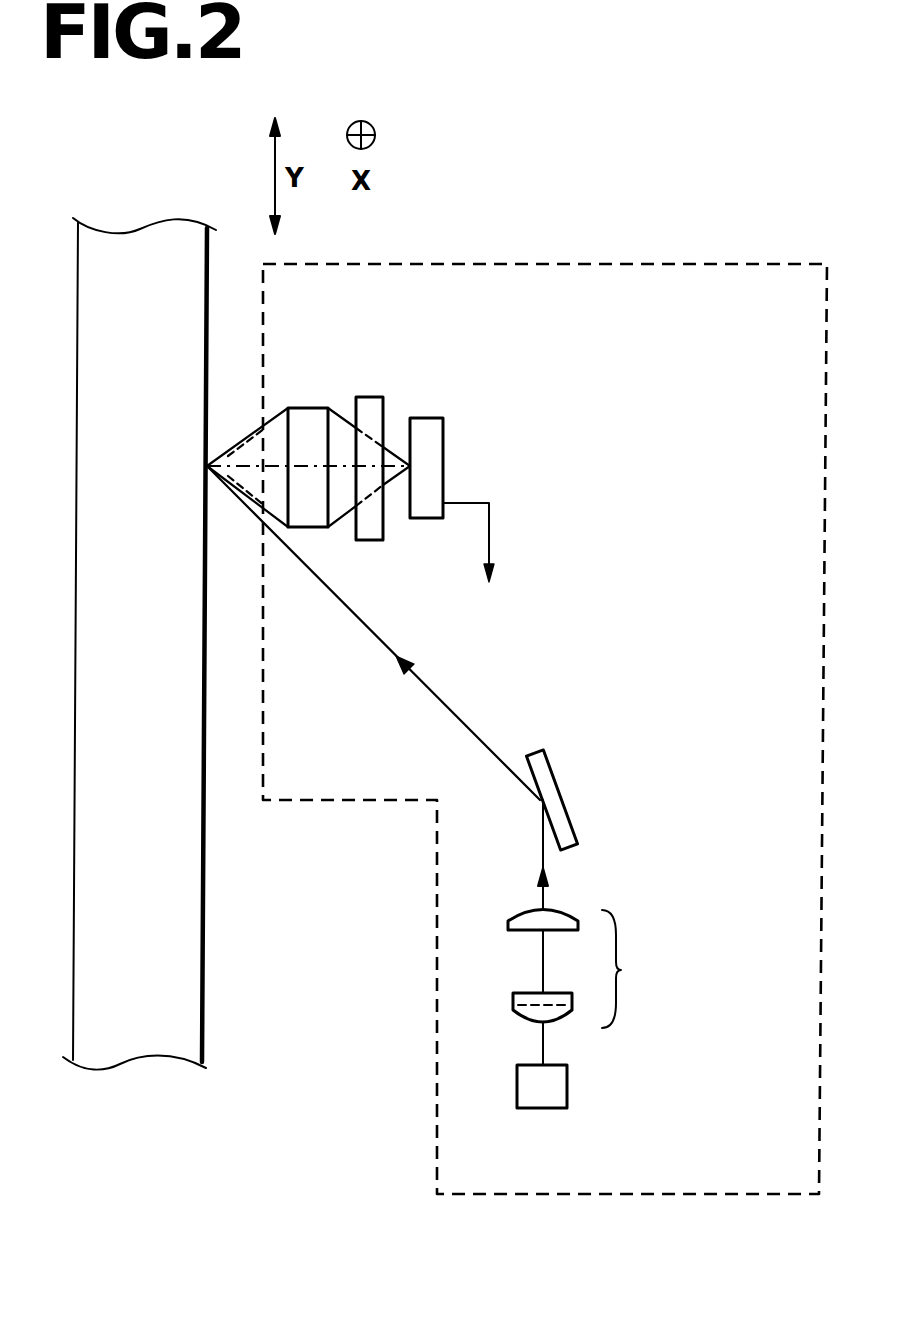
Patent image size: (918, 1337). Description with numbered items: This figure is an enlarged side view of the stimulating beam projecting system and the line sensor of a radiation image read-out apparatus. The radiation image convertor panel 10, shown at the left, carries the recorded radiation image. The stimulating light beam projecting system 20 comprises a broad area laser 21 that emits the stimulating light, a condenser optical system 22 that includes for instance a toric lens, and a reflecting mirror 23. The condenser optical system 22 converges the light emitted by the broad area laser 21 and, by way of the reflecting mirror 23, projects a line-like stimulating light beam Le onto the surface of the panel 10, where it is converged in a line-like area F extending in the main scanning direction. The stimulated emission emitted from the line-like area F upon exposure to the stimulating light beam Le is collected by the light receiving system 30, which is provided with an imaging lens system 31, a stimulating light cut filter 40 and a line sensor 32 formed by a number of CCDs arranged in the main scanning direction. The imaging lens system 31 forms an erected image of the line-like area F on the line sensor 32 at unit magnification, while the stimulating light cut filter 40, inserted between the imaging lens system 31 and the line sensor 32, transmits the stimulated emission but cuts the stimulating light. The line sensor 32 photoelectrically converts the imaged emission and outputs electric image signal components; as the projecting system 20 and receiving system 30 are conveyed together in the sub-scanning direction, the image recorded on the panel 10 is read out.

The radiation image convertor panel 10 is at (120, 1052).
The stimulating light beam projecting system 20 is at (712, 986).
The broad area laser 21 is at (558, 1085).
The condenser optical system 22 is at (586, 932).
The reflecting mirror 23 is at (565, 830).
The light receiving system 30 is at (409, 447).
The imaging lens system 31 is at (303, 414).
The line sensor 32 is at (428, 424).
The stimulating light cut filter 40 is at (370, 405).
The line-like area F is at (233, 450).
The stimulating light beam Le is at (456, 714).